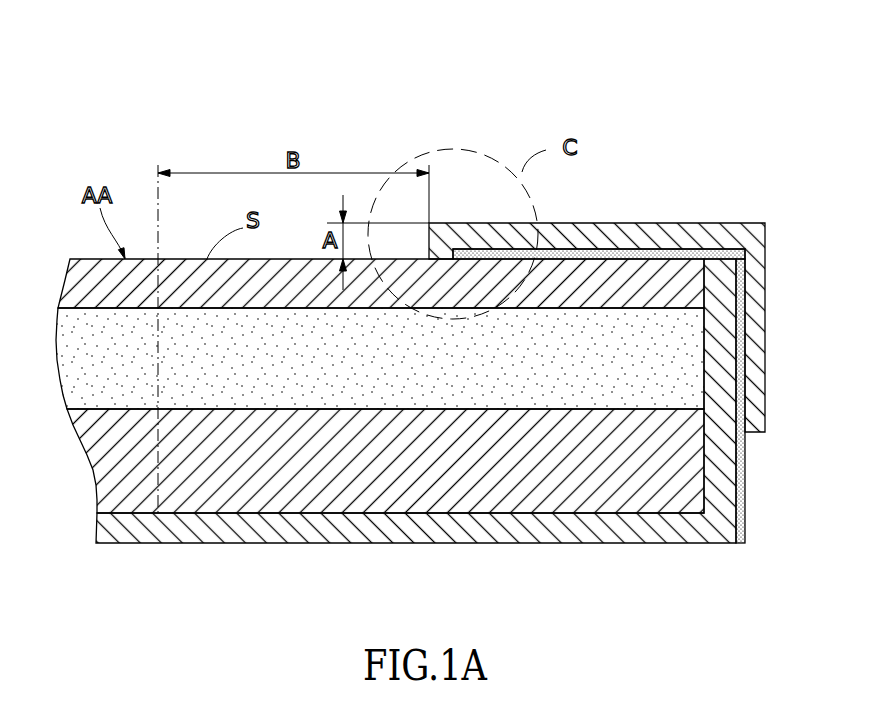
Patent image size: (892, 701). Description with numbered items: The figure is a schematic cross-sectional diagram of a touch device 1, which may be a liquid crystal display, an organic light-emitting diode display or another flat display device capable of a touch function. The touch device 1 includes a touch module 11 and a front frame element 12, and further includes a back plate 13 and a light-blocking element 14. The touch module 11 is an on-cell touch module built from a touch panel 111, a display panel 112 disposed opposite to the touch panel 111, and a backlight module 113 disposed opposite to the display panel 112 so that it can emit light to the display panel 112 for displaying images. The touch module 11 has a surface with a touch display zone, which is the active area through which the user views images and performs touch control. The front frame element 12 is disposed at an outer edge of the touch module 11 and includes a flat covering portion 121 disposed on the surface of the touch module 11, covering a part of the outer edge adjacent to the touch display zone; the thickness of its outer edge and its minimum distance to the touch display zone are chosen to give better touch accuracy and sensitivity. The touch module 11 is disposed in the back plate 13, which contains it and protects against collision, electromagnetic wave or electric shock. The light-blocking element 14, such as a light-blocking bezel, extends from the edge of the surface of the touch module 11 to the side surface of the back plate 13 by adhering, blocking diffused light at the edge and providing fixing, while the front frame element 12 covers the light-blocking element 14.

The touch device 1 is at (116, 78).
The touch module 11 is at (68, 258).
The touch panel 111 is at (86, 296).
The display panel 112 is at (62, 390).
The backlight module 113 is at (104, 473).
The front frame element 12 is at (760, 297).
The covering portion 121 is at (627, 233).
The back plate 13 is at (564, 533).
The light-blocking element 14 is at (745, 500).